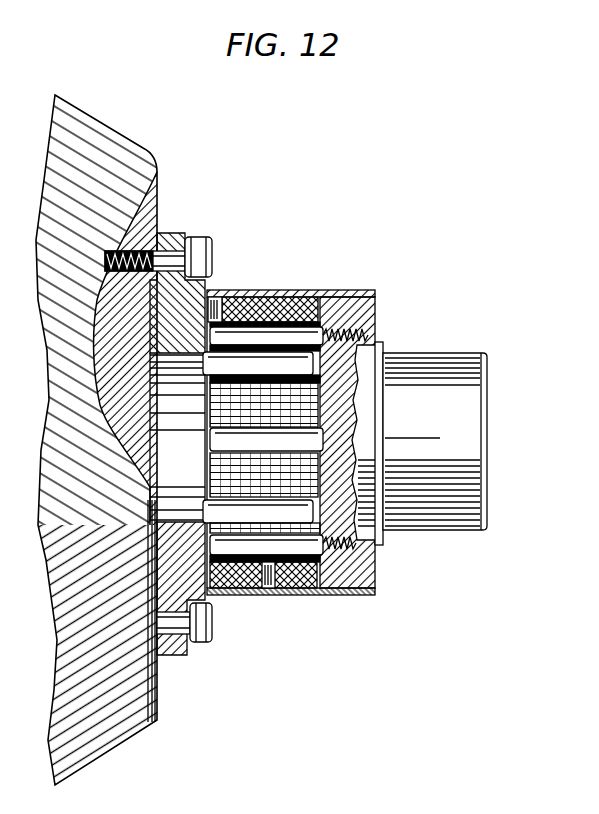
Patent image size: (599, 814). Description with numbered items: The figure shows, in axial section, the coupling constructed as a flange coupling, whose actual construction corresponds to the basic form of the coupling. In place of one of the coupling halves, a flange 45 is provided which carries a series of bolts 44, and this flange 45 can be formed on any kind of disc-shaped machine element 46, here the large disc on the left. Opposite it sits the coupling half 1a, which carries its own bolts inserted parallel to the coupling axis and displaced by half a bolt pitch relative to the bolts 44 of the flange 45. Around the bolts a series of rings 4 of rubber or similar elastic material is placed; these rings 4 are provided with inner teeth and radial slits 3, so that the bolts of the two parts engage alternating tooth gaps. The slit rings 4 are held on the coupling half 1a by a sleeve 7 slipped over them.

The disc-shaped machine element 46 is at (158, 170).
The flange 45 is at (178, 297).
The bolts 44 is at (250, 355).
The rings 4 is at (316, 297).
The coupling half 1a is at (341, 310).
The sleeve 7 is at (378, 328).
The radial slits 3 is at (276, 590).